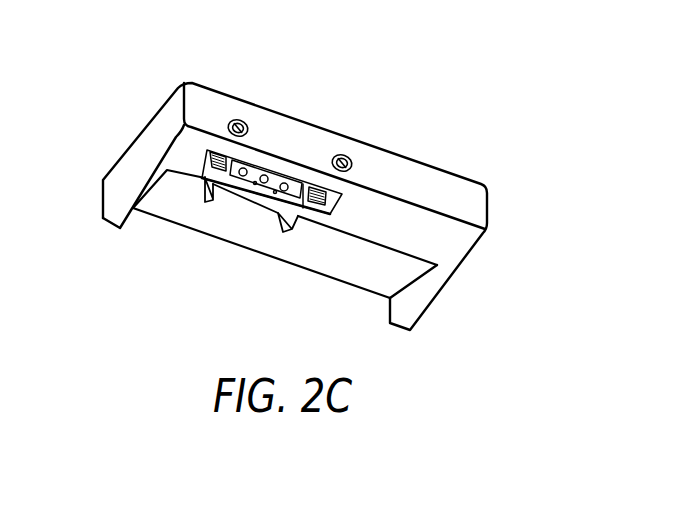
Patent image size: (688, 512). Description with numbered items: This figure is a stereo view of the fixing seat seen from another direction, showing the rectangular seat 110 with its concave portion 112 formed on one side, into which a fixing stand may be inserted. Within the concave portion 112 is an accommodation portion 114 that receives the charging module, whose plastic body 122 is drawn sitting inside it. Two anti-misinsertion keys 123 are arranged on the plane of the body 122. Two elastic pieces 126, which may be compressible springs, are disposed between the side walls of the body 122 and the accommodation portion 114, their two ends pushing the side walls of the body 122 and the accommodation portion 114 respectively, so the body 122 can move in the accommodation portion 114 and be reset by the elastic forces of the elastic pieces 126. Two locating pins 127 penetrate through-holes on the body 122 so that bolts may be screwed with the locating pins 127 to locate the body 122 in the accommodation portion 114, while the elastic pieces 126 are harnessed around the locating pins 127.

The seat 110 is at (462, 240).
The concave portion 112 is at (373, 283).
The accommodation portion 114 is at (340, 204).
The body 122 is at (267, 212).
The anti-misinsertion keys 123 is at (208, 204).
The elastic pieces 126 is at (317, 207).
The locating pins 127 is at (247, 124).